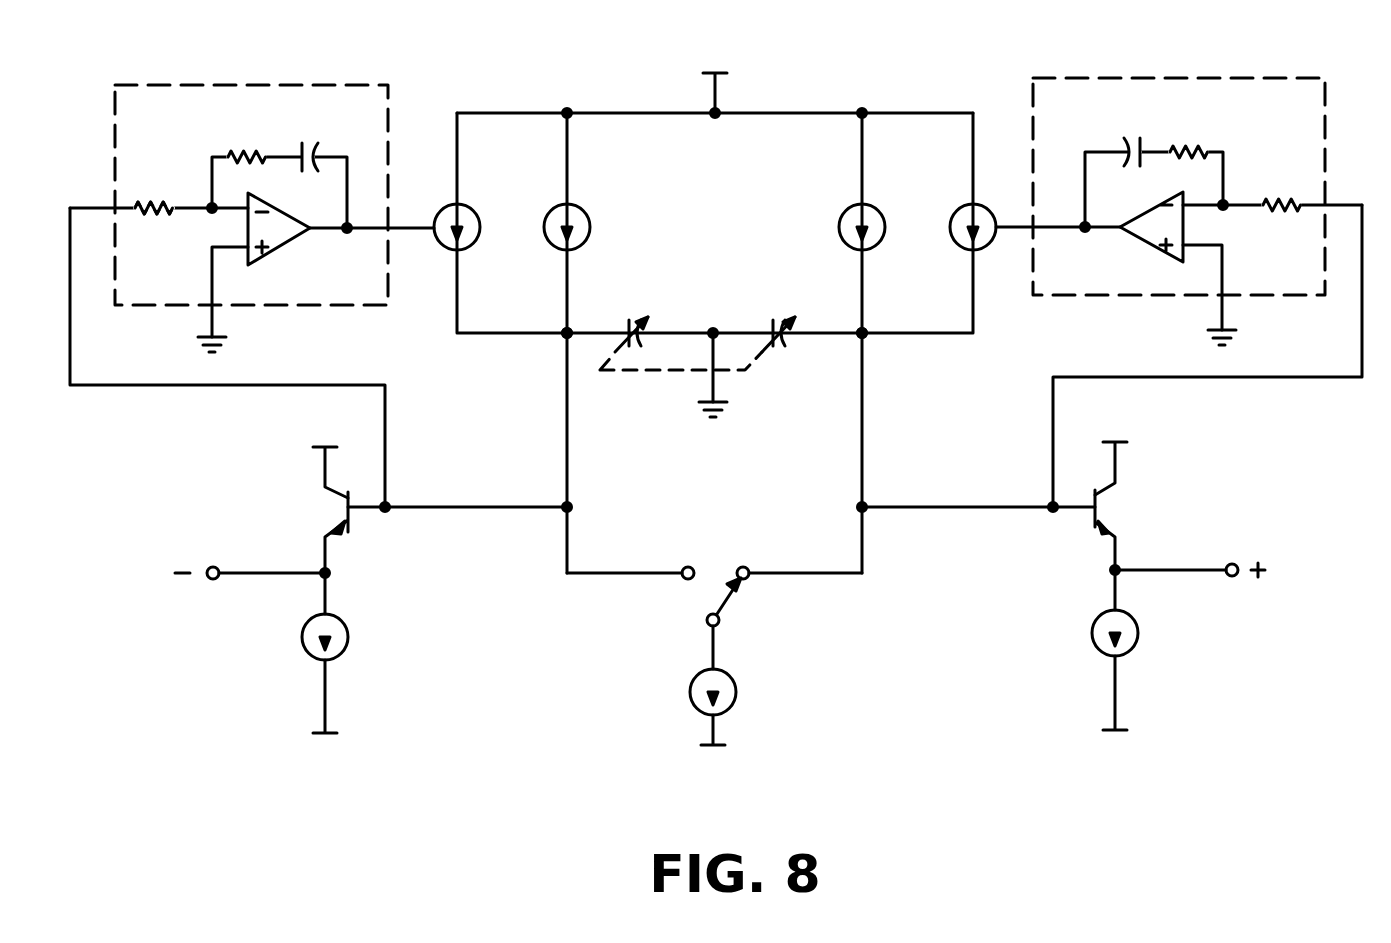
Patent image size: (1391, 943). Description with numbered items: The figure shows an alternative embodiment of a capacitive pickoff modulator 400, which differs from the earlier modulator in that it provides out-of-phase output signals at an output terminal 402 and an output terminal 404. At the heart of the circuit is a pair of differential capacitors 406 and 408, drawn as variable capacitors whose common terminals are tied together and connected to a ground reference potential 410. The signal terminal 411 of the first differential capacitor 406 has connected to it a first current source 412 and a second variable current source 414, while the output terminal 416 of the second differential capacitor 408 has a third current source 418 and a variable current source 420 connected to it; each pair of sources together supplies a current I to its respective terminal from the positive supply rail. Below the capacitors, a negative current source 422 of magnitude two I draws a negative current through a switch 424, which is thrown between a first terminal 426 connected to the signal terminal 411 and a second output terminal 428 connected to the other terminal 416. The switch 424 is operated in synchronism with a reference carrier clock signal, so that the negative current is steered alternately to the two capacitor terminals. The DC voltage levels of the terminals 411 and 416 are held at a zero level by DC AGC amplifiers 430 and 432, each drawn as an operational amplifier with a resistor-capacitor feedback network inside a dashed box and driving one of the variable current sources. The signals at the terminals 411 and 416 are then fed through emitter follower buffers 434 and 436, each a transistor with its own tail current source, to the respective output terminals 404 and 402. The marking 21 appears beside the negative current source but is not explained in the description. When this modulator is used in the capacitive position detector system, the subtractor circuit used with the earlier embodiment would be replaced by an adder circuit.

The capacitive pickoff modulator 400 is at (1025, 43).
The output terminal 402 is at (1236, 563).
The output terminal 404 is at (216, 567).
The first differential capacitor 406 is at (648, 316).
The second differential capacitor 408 is at (793, 316).
The ground reference potential 410 is at (727, 402).
The signal terminal 411 is at (565, 338).
The first current source 412 is at (585, 212).
The second variable current source 414 is at (475, 212).
The output terminal of the second differential capacitor 416 is at (865, 338).
The third current source 418 is at (845, 212).
The variable current source 420 is at (955, 210).
The negative current source 422 is at (690, 695).
The switch 424 is at (730, 600).
The first terminal 426 is at (686, 566).
The second output terminal 428 is at (746, 566).
The DC AGC amplifier 430 is at (300, 240).
The DC AGC amplifier 432 is at (1140, 242).
The emitter follower buffer 434 is at (360, 518).
The emitter follower buffer 436 is at (1085, 518).
The unlabeled element 21 is at (772, 693).